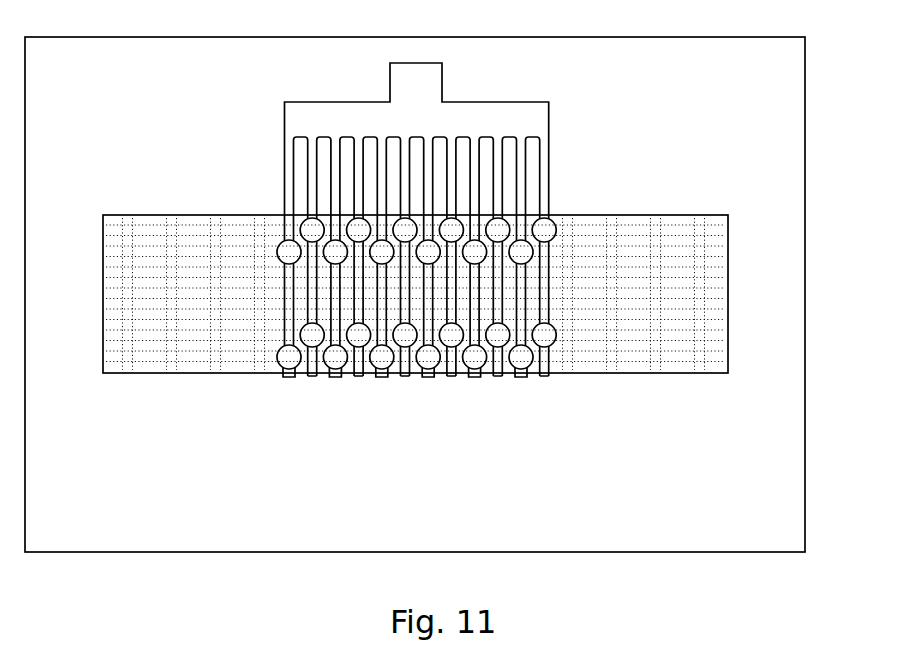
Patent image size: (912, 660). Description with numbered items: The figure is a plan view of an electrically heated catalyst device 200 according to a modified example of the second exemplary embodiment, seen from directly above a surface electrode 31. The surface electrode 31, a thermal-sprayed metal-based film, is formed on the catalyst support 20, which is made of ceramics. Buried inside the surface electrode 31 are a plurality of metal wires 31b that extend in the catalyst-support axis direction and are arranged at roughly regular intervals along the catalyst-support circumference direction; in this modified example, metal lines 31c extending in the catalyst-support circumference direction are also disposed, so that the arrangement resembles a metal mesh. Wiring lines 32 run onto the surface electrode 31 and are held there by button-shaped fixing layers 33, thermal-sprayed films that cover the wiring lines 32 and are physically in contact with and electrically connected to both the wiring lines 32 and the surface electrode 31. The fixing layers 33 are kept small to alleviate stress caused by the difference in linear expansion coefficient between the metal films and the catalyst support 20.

The electrically heated catalyst device 200 is at (457, 285).
The catalyst support 20 is at (797, 493).
The surface electrode 31 is at (448, 261).
The metal wires 31b is at (716, 233).
The metal lines 31c is at (695, 222).
The wiring lines 32 is at (549, 155).
The fixing layers 33 is at (280, 363).